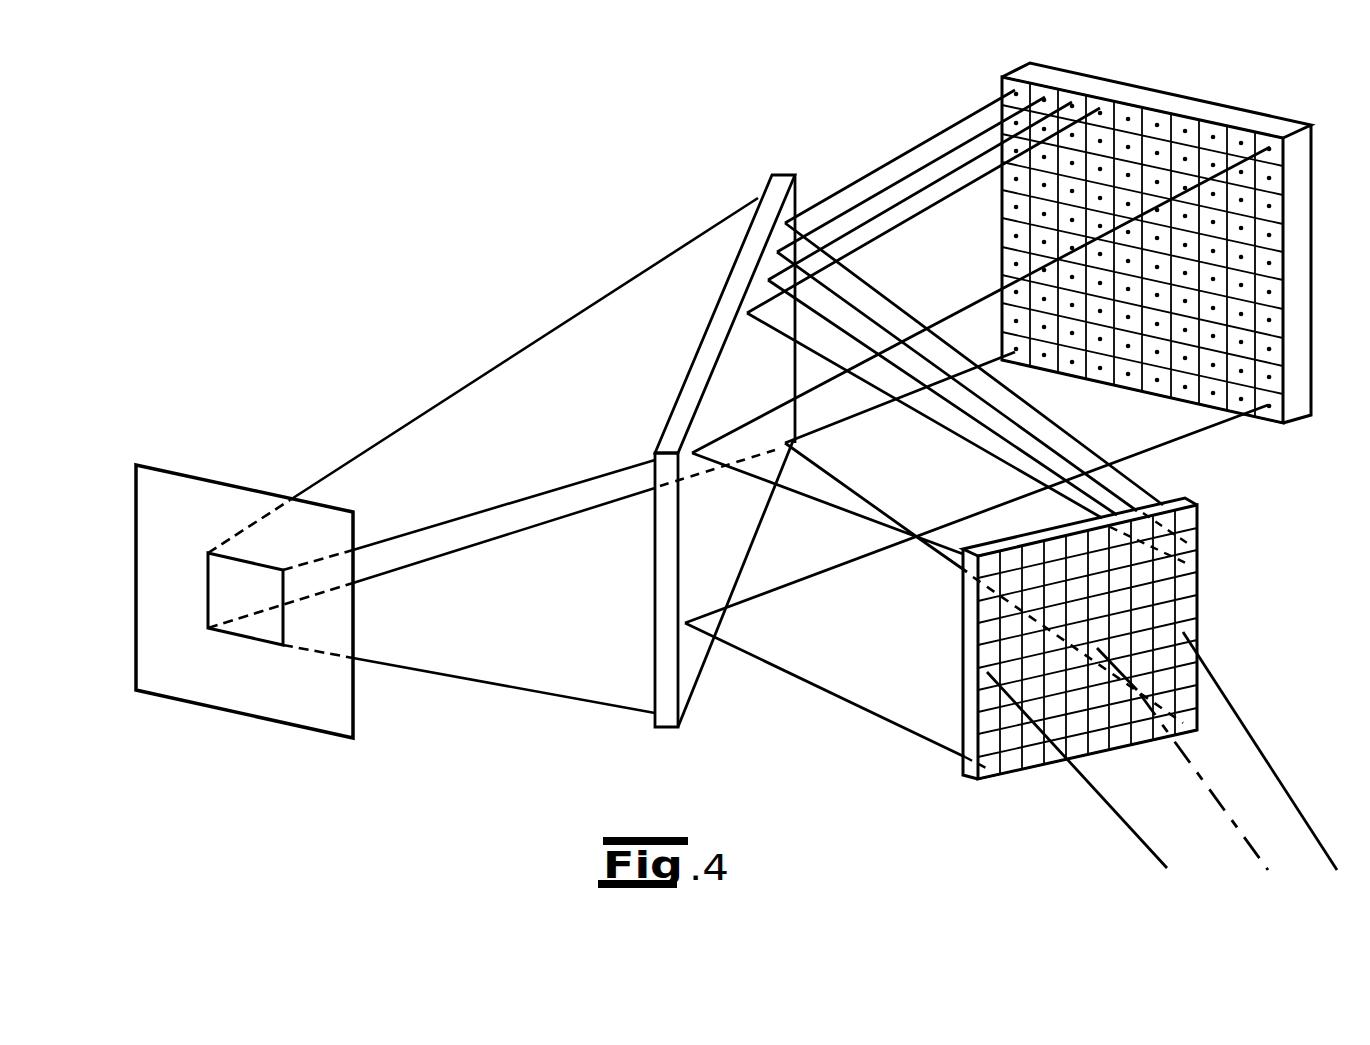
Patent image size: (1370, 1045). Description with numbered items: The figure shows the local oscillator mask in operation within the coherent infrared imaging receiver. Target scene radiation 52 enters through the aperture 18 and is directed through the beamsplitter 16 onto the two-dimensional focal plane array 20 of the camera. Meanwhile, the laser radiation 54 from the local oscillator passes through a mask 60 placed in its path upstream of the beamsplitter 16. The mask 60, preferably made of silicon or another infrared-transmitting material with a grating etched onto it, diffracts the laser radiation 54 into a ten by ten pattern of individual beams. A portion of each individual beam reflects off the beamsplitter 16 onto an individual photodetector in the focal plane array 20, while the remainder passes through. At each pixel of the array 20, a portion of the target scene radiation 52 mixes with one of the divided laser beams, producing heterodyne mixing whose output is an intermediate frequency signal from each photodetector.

The beamsplitter 16 is at (784, 173).
The aperture 18 is at (230, 481).
The focal plane array 20 is at (1122, 80).
The target scene radiation 52 is at (528, 392).
The laser radiation 54 is at (1258, 815).
The mask 60 is at (1200, 541).